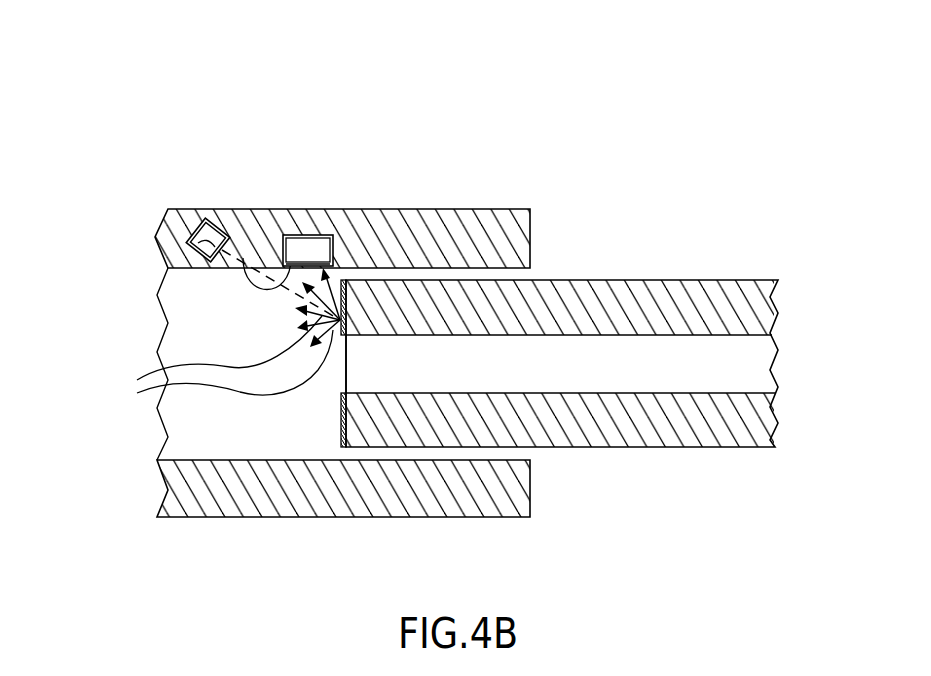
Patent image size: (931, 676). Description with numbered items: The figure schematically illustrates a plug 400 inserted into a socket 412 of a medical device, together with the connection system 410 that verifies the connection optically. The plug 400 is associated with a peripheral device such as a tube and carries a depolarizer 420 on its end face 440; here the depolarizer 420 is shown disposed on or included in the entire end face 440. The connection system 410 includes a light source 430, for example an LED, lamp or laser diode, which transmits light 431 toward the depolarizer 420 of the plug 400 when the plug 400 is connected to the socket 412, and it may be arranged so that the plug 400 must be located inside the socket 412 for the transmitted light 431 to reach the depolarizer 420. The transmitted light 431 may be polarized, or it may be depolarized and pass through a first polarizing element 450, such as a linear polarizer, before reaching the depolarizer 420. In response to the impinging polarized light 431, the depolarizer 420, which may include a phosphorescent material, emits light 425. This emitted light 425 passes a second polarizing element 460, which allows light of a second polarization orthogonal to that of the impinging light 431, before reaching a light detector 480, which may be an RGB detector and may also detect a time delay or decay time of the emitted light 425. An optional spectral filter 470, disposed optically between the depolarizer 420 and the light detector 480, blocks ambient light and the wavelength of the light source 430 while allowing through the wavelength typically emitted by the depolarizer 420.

The plug 400 is at (658, 98).
The connection system 410 is at (313, 98).
The socket 412 is at (250, 518).
The depolarizer 420 is at (338, 330).
The emitted light 425 is at (210, 361).
The light source 430 is at (192, 224).
The transmitted light 431 is at (287, 288).
The end face 440 is at (341, 439).
The first polarizing element 450 is at (198, 243).
The second polarizing element 460 is at (321, 262).
The spectral filter 470 is at (243, 262).
The light detector 480 is at (306, 235).